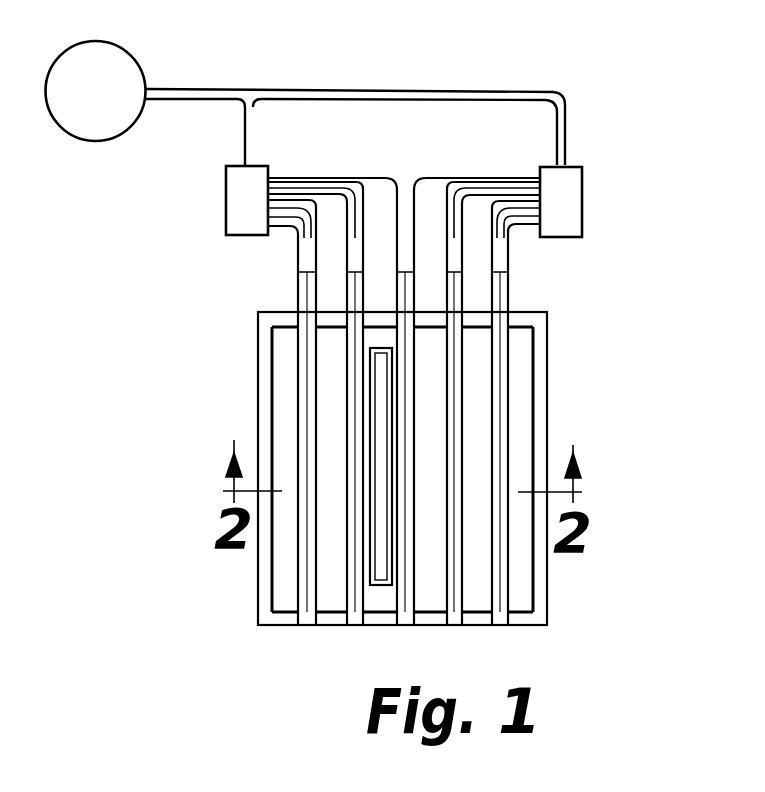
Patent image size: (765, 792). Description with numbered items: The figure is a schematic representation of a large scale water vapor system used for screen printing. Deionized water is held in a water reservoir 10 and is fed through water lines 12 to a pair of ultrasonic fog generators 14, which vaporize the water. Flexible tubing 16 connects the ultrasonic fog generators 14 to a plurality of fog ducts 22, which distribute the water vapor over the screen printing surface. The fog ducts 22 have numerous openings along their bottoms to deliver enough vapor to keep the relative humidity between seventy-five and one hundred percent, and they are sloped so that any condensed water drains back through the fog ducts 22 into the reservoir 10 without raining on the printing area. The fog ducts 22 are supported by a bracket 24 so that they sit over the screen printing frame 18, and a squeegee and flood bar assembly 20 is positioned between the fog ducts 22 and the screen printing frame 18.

The water reservoir 10 is at (123, 72).
The water lines 12 is at (437, 96).
The ultrasonic fog generators 14 is at (548, 178).
The flexible tubing 16 is at (503, 253).
The screen printing frame 18 is at (387, 468).
The squeegee and flood bar assembly 20 is at (380, 374).
The fog ducts 22 is at (453, 578).
The bracket 24 is at (265, 410).